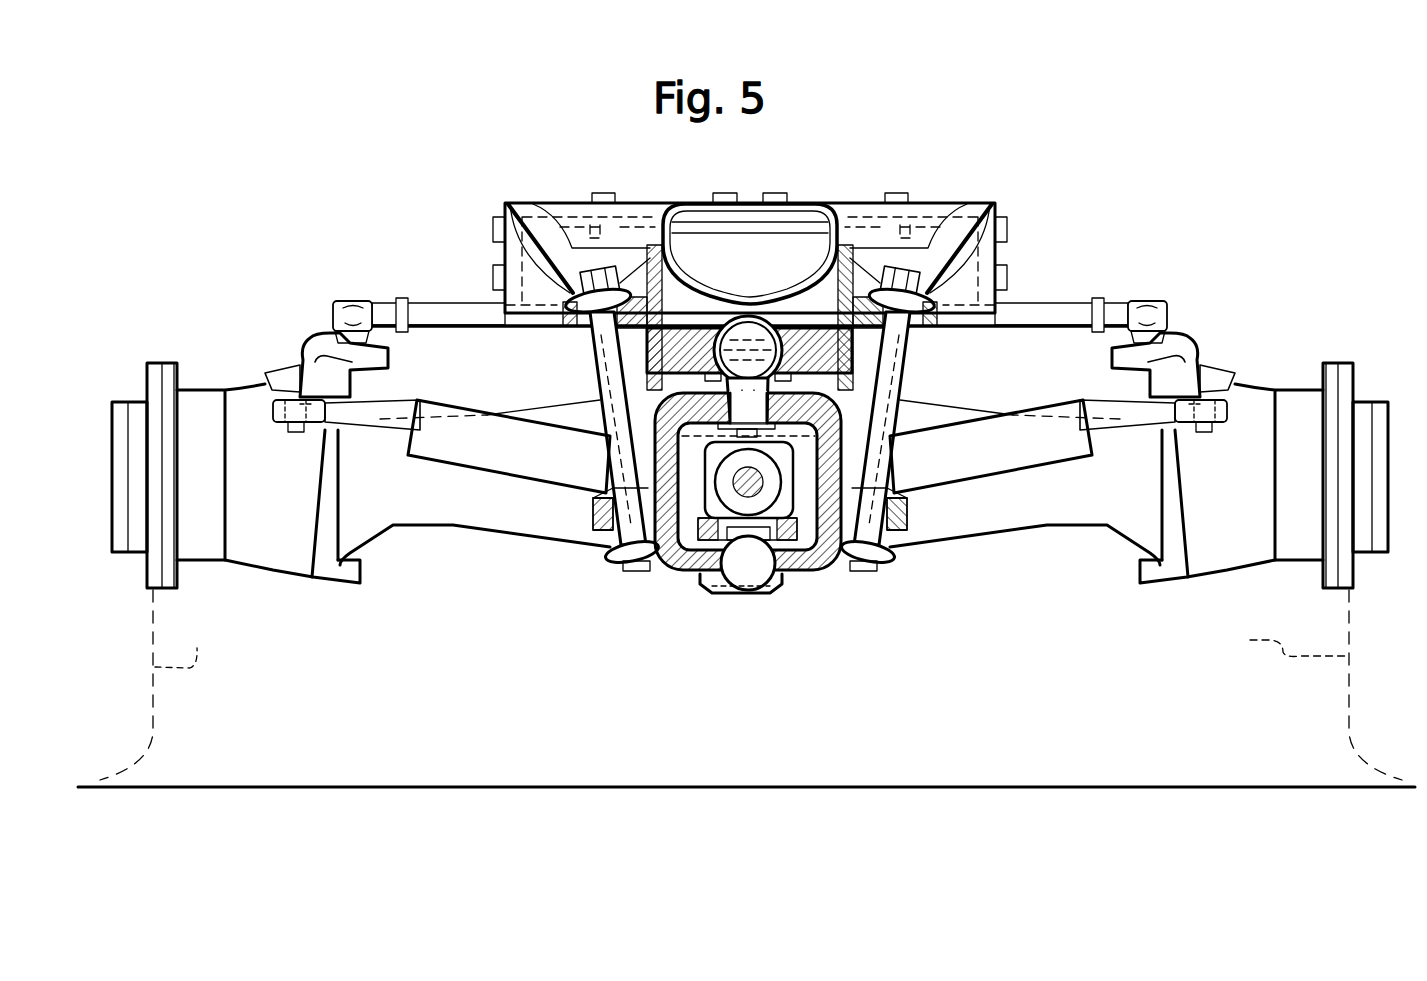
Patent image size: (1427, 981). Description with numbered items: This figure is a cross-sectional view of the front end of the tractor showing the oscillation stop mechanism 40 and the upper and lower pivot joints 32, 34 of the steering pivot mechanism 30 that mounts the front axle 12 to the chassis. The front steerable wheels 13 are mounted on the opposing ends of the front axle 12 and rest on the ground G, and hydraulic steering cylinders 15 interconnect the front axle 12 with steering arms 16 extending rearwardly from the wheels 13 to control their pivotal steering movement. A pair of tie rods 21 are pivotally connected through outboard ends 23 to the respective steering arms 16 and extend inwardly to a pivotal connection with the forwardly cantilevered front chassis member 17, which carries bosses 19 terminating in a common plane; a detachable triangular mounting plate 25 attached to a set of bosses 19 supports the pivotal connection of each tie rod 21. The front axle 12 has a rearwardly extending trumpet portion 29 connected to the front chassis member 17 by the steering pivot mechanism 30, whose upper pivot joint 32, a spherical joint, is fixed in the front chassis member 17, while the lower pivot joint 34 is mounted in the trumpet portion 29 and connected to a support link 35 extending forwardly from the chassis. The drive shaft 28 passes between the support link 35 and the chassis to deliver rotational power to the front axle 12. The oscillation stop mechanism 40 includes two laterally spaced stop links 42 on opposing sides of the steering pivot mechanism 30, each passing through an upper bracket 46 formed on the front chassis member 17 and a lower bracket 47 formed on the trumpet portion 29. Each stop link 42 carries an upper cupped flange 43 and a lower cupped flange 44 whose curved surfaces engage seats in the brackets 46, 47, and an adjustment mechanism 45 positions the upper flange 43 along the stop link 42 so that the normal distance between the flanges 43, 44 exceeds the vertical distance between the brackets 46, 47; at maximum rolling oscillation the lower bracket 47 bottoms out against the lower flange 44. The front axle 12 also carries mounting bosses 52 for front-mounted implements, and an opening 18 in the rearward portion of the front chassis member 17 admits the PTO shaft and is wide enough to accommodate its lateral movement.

The front axle 12 is at (1048, 526).
The front steerable wheels 13 is at (205, 645).
The hydraulic steering cylinders 15 is at (443, 443).
The steering arms 16 is at (307, 342).
The front chassis member 17 is at (972, 203).
The opening 18 is at (977, 227).
The bosses 19 is at (745, 240).
The tie rods 21 is at (420, 302).
The tie rod end 23 is at (333, 300).
The triangular mounting plate 25 is at (725, 232).
The drive shaft 28 is at (680, 568).
The trumpet portion 29 is at (730, 486).
The steering pivot mechanism 30 is at (747, 570).
The upper pivot joint 32 is at (752, 354).
The lower pivot joint 34 is at (775, 595).
The support link 35 is at (768, 578).
The oscillation stop mechanism 40 is at (772, 403).
The stop links 42 is at (600, 378).
The upper cupped flange 43 is at (507, 205).
The lower cupped flange 44 is at (603, 555).
The adjustment mechanism 45 is at (574, 266).
The upper bracket 46 is at (567, 330).
The lower bracket 47 is at (593, 510).
The mounting bosses 52 is at (490, 277).
The ground G is at (1043, 787).